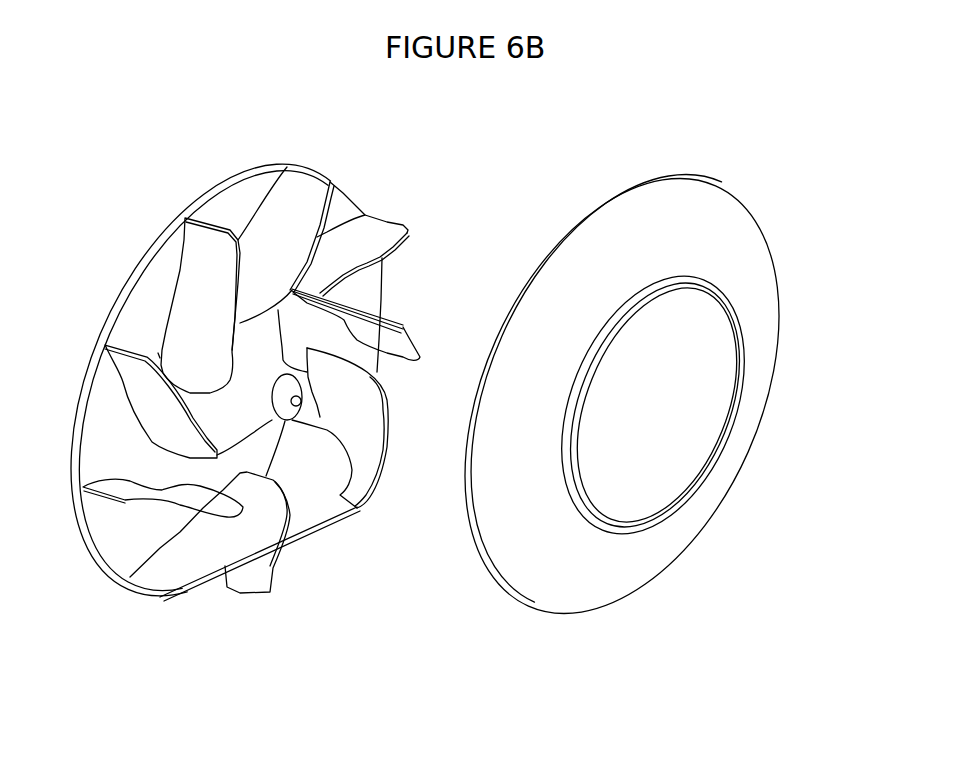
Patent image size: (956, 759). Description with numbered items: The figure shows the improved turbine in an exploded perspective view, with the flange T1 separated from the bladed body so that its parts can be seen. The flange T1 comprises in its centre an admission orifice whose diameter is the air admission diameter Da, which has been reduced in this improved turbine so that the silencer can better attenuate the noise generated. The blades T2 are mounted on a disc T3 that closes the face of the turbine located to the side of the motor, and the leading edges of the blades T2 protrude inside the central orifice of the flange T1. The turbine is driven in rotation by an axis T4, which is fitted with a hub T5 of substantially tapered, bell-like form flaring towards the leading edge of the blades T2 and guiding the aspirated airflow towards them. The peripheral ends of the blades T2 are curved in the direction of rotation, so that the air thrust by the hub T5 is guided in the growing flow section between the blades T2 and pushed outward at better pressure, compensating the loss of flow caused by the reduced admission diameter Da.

The flange T1 is at (692, 238).
The blades T2 is at (401, 327).
The disc T3 is at (243, 188).
The axis T4 is at (299, 404).
The hub T5 is at (243, 410).
The air admission diameter Da is at (732, 320).